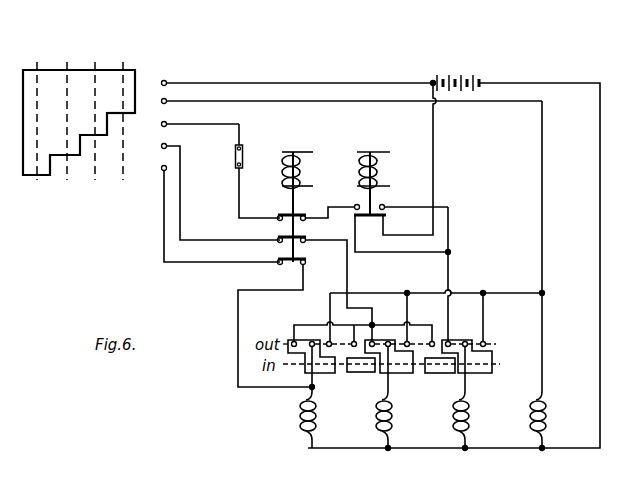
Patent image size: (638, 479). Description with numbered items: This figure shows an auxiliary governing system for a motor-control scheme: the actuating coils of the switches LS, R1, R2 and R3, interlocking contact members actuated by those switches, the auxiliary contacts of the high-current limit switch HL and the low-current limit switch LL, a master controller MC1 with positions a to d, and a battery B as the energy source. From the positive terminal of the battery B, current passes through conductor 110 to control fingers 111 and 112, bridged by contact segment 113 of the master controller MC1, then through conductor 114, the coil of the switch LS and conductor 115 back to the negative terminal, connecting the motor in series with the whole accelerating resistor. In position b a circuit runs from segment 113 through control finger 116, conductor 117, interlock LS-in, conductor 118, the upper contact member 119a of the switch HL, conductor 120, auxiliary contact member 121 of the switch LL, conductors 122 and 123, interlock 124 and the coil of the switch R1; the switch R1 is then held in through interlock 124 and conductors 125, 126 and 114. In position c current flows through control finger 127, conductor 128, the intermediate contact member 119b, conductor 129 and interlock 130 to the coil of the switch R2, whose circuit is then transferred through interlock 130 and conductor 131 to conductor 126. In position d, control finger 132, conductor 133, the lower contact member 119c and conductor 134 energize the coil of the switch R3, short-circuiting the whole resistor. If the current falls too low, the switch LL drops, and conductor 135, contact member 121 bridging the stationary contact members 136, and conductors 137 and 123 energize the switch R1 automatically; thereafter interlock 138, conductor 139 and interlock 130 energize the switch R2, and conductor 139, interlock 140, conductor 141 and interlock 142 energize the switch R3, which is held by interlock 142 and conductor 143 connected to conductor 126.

The conductor 110 is at (419, 82).
The control finger 111 is at (165, 83).
The control finger 112 is at (165, 101).
The contact segment 113 is at (117, 99).
The conductor 114 is at (326, 103).
The conductor 115 is at (554, 83).
The control finger 116 is at (165, 124).
The conductor 117 is at (241, 123).
The conductor 118 is at (239, 205).
The movable upper contact member 119a is at (307, 222).
The intermediate movable contact member 119b is at (307, 244).
The lower contact member 119c is at (286, 272).
The conductor 120 is at (329, 207).
The auxiliary contact member 121 is at (386, 216).
The conductor 122 is at (448, 233).
The conductor 123 is at (448, 286).
The interlock 124 is at (494, 368).
The conductor 125 is at (483, 314).
The conductor 126 is at (428, 287).
The control finger 127 is at (162, 146).
The conductor 128 is at (180, 163).
The conductor 129 is at (347, 279).
The interlock 130 is at (397, 369).
The conductor 131 is at (407, 312).
The control finger 132 is at (162, 168).
The conductor 133 is at (210, 262).
The conductor 134 is at (238, 324).
The conductor 135 is at (433, 152).
The stationary contact members 136 is at (357, 216).
The conductor 137 is at (395, 252).
The interlock 138 is at (444, 378).
The conductor 139 is at (393, 318).
The interlock 140 is at (363, 378).
The conductor 141 is at (345, 319).
The interlock 142 is at (309, 366).
The conductor 143 is at (299, 327).
The battery B is at (468, 75).
The master controller MC1 is at (79, 100).
The high-current limit switch HL is at (285, 207).
The low-current limit switch LL is at (381, 183).
The interlock LS-in is at (242, 148).
The switch LS is at (551, 372).
The switch R1 is at (474, 399).
The switch R2 is at (398, 399).
The switch R3 is at (323, 417).